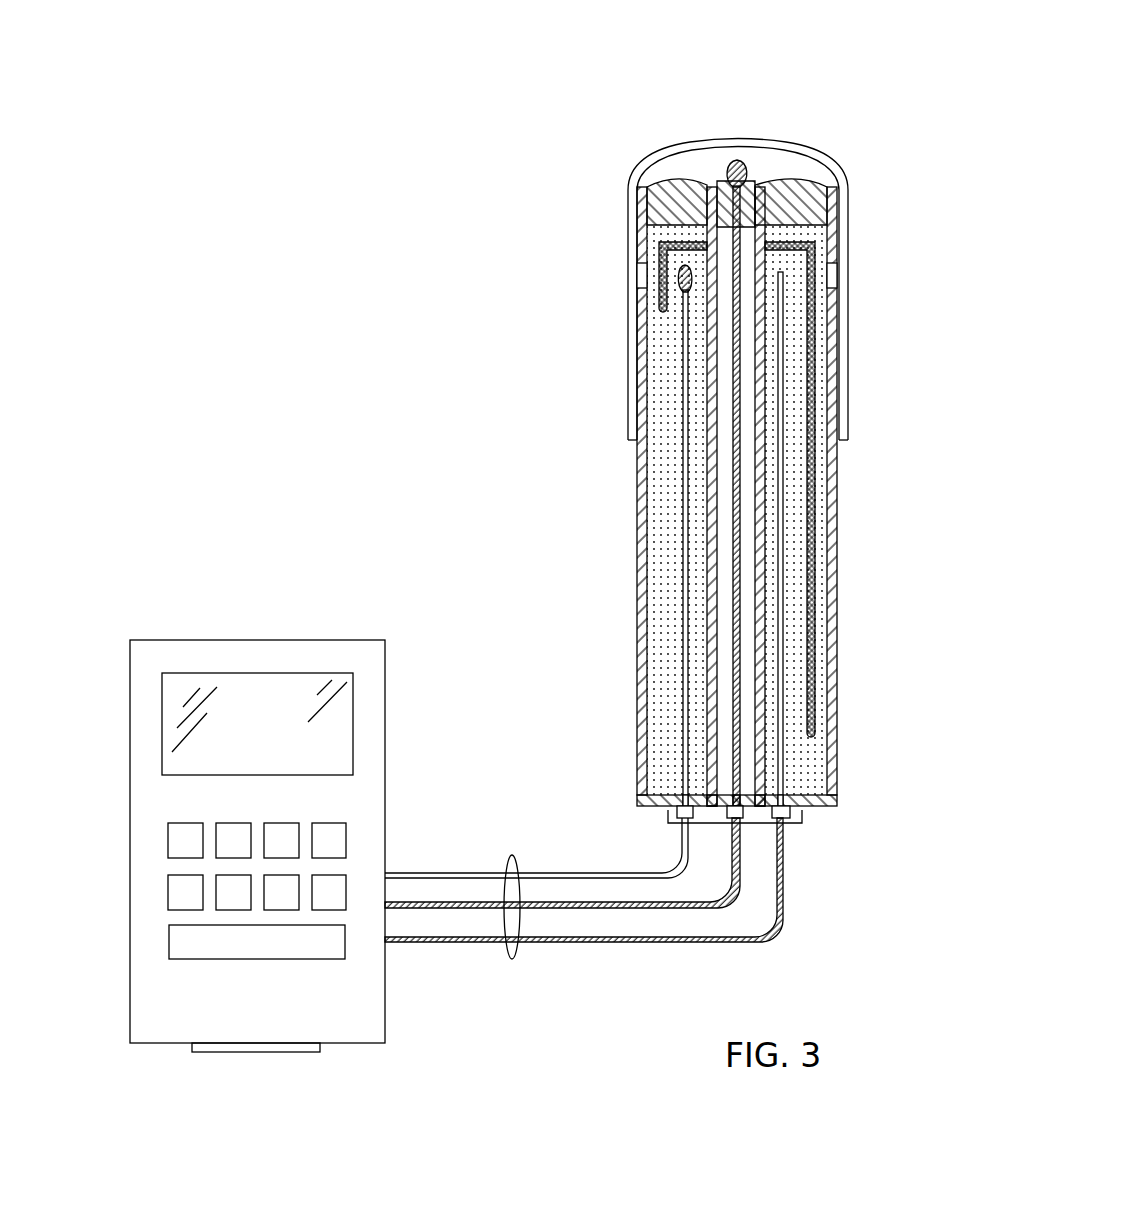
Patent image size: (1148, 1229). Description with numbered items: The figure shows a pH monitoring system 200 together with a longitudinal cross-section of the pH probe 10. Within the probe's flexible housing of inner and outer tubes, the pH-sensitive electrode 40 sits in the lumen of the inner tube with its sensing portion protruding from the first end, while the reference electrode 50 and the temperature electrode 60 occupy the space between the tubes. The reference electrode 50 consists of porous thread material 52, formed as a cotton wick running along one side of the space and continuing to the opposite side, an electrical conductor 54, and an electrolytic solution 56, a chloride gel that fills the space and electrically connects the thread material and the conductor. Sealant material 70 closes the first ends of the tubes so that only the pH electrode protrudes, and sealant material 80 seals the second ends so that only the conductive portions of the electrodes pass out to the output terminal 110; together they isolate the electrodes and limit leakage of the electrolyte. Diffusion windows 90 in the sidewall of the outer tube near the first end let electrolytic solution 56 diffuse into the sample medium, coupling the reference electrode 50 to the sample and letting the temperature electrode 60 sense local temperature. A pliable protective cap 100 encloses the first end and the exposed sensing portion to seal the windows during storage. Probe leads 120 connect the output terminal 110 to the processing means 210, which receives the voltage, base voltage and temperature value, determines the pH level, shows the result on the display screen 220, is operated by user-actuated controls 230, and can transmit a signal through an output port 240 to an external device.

The pH probe 10 is at (805, 62).
The pH-sensitive electrode 40 is at (737, 160).
The reference electrode 50 is at (798, 524).
The porous thread material 52 is at (814, 517).
The electrical conductor 54 is at (865, 463).
The electrolytic solution 56 is at (797, 602).
The temperature electrode 60 is at (676, 482).
The sealant material 70 is at (681, 188).
The sealant material 80 is at (657, 803).
The diffusion windows 90 is at (640, 276).
The protective cap 100 is at (806, 155).
The output terminal 110 is at (796, 830).
The probe leads 120 is at (513, 960).
The system 200 is at (250, 145).
The processing means 210 is at (376, 1034).
The display screen 220 is at (338, 764).
The user-actuated controls 230 is at (162, 958).
The output port 240 is at (276, 1053).